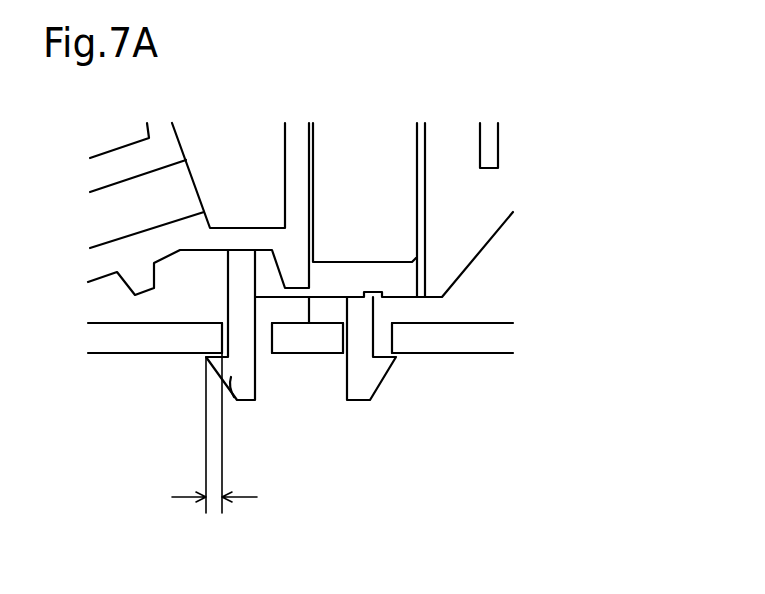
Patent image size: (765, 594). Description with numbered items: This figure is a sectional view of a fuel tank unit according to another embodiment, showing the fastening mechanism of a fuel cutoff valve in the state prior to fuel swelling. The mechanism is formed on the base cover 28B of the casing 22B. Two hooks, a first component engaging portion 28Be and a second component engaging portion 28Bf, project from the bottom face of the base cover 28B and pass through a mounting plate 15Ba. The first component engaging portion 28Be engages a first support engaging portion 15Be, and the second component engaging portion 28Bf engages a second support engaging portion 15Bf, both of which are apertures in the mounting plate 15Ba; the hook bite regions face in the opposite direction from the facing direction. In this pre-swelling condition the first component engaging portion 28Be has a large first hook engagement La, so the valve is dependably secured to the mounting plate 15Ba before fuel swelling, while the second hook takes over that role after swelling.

The base cover 28B is at (369, 223).
The casing 22B is at (432, 297).
The first component engaging portion 28Be is at (237, 400).
The second component engaging portion 28Bf is at (362, 380).
The mounting plate 15Ba is at (493, 335).
The first support engaging portion 15Be is at (267, 345).
The second support engaging portion 15Bf is at (381, 338).
The first hook engagement La is at (214, 450).